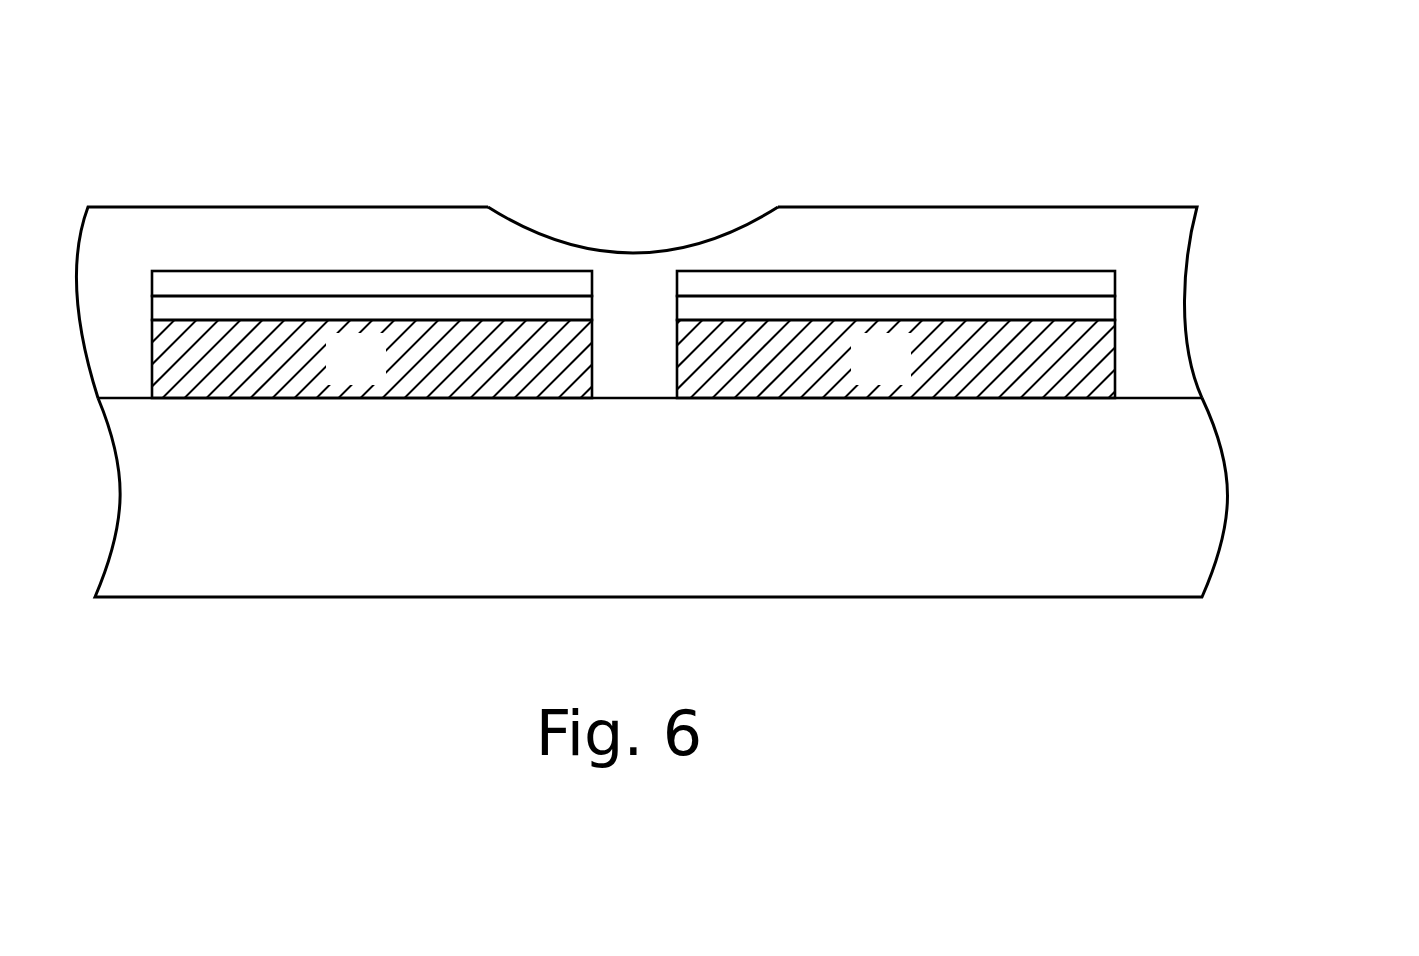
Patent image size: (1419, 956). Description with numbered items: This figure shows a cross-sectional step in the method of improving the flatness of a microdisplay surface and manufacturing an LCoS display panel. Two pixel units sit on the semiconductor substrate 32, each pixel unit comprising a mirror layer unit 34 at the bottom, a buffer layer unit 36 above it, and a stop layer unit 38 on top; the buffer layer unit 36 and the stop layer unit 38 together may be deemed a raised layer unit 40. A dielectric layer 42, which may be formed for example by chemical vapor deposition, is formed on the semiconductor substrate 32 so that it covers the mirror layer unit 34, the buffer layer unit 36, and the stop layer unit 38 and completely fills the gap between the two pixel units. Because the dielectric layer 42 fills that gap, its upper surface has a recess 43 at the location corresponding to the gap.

The semiconductor substrate 32 is at (605, 537).
The mirror layer unit 34 is at (380, 378).
The buffer layer unit 36 is at (1105, 308).
The stop layer unit 38 is at (1097, 285).
The raised layer unit 40 is at (1287, 207).
The dielectric layer 42 is at (950, 247).
The recess 43 is at (640, 202).